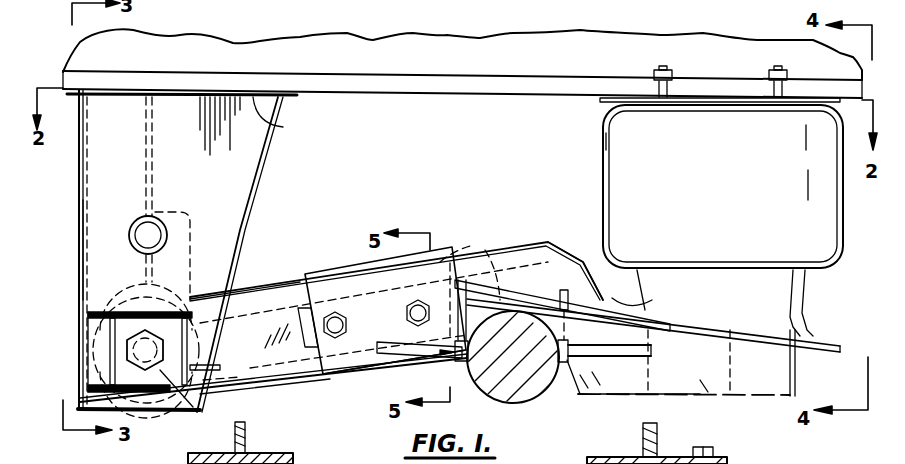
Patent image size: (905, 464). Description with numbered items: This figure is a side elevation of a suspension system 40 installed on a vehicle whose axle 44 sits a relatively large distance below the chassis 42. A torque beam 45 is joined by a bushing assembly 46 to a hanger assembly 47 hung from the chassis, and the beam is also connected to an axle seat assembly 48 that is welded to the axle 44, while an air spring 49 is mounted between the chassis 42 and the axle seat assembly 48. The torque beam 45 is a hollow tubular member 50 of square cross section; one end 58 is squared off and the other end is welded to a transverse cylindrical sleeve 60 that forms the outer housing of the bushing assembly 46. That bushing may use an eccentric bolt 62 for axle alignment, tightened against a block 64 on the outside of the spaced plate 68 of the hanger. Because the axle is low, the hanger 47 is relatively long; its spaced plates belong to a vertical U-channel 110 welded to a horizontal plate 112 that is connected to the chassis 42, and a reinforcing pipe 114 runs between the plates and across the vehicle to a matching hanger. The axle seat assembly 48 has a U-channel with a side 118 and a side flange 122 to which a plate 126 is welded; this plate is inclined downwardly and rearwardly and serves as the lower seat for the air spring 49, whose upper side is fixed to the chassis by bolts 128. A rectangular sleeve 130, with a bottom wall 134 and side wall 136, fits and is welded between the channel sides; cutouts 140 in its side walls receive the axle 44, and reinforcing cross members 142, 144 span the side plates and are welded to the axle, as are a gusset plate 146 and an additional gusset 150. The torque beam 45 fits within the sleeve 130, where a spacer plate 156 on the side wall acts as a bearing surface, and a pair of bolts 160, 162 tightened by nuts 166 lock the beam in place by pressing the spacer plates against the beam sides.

The suspension system 40 is at (532, 412).
The chassis 42 is at (396, 91).
The axle 44 is at (547, 400).
The torque beam 45 is at (303, 390).
The bushing assembly 46 is at (95, 358).
The hanger assembly 47 is at (72, 240).
The axle seat assembly 48 is at (503, 248).
The air spring 49 is at (606, 165).
The hollow tubular member 50 is at (240, 290).
The end of tubular member 58 is at (442, 282).
The transverse cylindrical sleeve 60 is at (92, 300).
The eccentric bolt 62 is at (200, 404).
The block 64 is at (157, 375).
The spaced plate 68 is at (97, 195).
The vertical U-channel 110 is at (79, 170).
The horizontal plate 112 is at (283, 122).
The reinforcing pipe 114 is at (172, 213).
The side of U-channel 118 is at (704, 390).
The side flange 122 is at (597, 300).
The plate 126 is at (803, 316).
The bolts 128 is at (770, 70).
The rectangular sleeve 130 is at (358, 256).
The bottom wall of sleeve 134 is at (378, 372).
The side wall of sleeve 136 is at (318, 284).
The cutout 140 is at (456, 374).
The reinforcing cross member 142 is at (496, 293).
The reinforcing cross member 144 is at (575, 262).
The gusset plate 146 is at (601, 392).
The gusset 150 is at (400, 358).
The spacer plate 156 is at (300, 378).
The bolt 160 is at (336, 340).
The bolt 162 is at (420, 300).
The nut 166 is at (406, 313).